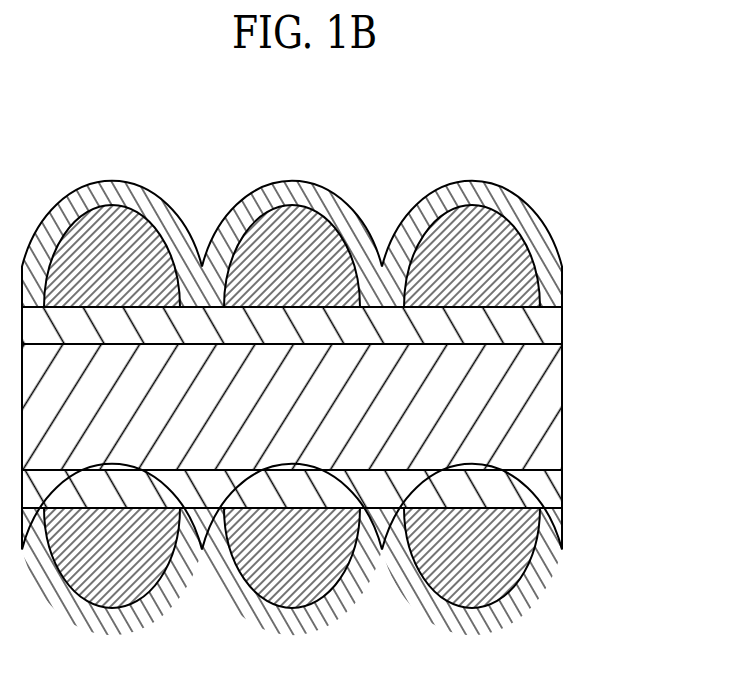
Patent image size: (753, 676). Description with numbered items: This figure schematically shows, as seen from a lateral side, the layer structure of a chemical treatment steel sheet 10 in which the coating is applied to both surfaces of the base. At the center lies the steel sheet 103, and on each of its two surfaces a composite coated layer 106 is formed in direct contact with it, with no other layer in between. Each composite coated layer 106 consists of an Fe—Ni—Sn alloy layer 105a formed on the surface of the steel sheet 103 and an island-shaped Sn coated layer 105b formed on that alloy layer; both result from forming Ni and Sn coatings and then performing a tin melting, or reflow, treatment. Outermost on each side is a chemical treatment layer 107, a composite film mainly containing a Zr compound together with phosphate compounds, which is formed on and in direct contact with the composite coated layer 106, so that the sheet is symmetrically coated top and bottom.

The chemical treatment steel sheet 10 is at (447, 129).
The steel sheet 103 is at (550, 397).
The Fe—Ni—Sn alloy layer 105a is at (550, 332).
The island-shaped Sn coated layer 105b is at (512, 283).
The composite coated layer 106 is at (667, 267).
The chemical treatment layer 107 is at (513, 225).